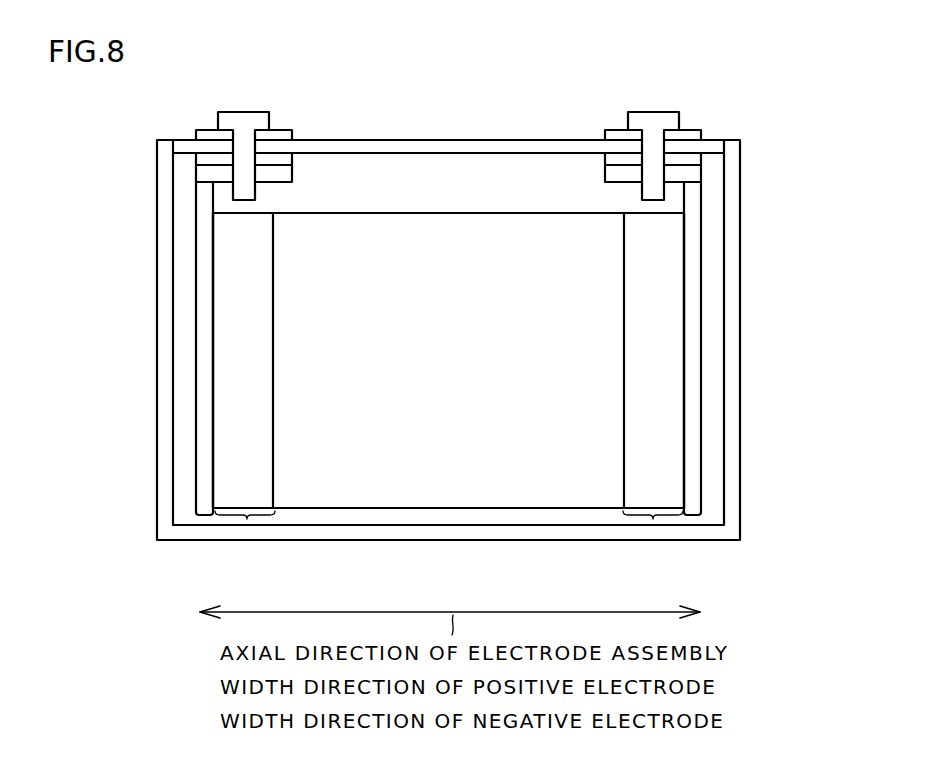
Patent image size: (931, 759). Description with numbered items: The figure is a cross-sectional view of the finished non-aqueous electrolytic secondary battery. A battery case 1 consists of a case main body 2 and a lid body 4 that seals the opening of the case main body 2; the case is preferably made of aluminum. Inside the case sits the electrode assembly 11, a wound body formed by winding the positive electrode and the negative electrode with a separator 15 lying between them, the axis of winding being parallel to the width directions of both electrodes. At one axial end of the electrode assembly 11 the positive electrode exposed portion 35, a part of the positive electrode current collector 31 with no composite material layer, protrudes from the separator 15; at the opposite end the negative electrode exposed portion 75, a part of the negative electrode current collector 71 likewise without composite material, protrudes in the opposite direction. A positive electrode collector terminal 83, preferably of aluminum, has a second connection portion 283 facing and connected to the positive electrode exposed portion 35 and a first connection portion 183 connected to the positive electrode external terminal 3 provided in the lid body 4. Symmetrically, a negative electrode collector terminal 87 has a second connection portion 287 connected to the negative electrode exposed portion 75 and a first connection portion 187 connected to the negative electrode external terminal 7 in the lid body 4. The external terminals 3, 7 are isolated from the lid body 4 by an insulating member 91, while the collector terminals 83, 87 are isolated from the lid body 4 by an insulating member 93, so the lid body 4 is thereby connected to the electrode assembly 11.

The battery case 1 is at (484, 326).
The case main body 2 is at (735, 198).
The positive electrode external terminal 3 is at (654, 113).
The lid body 4 is at (477, 136).
The negative electrode external terminal 7 is at (243, 113).
The electrode assembly 11 is at (450, 341).
The separator 15 is at (452, 485).
The positive electrode current collector 31 is at (660, 408).
The positive electrode exposed portion 35 is at (653, 519).
The negative electrode current collector 71 is at (238, 408).
The negative electrode exposed portion 75 is at (247, 519).
The positive electrode collector terminal 83 is at (591, 286).
The negative electrode collector terminal 87 is at (306, 286).
The insulating member 91 is at (277, 134).
The insulating member 93 is at (283, 158).
The first connection portion 183 is at (613, 174).
The first connection portion 187 is at (284, 174).
The second connection portion 283 is at (692, 295).
The second connection portion 287 is at (205, 295).